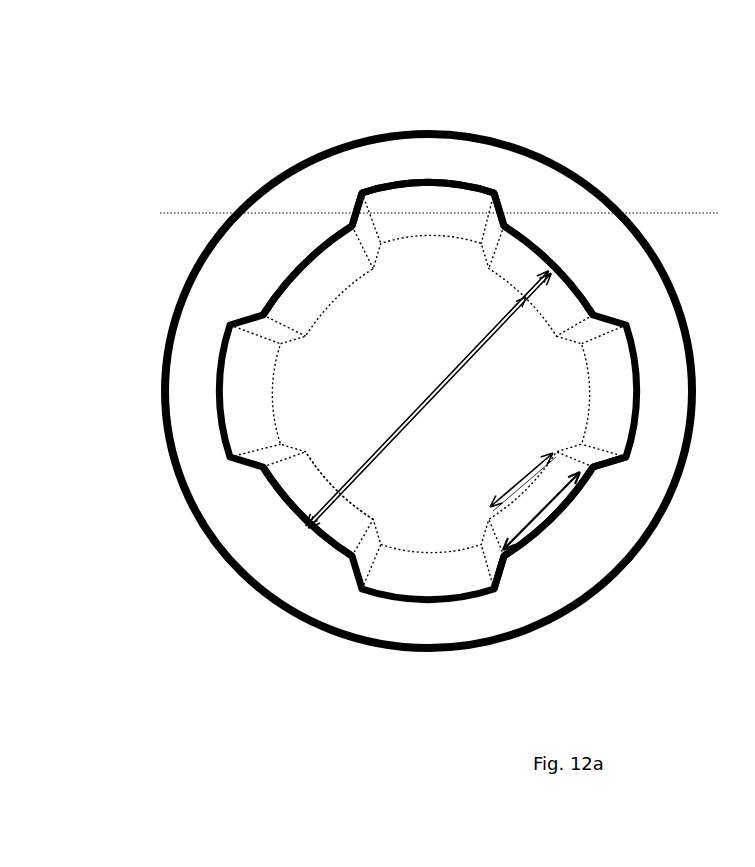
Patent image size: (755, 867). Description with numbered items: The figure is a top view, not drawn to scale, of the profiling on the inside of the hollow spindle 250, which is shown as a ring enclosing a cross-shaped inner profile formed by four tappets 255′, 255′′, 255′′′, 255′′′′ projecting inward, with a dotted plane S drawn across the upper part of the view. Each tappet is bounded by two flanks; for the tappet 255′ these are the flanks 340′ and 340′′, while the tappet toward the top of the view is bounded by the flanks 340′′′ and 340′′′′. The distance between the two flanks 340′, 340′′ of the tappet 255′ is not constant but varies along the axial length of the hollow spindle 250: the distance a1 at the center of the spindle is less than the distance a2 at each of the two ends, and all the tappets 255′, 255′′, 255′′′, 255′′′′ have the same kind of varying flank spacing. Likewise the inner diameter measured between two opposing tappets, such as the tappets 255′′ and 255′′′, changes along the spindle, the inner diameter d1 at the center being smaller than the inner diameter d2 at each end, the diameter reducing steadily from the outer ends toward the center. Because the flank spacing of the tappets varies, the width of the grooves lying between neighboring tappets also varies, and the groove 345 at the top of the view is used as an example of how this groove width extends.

The hollow spindle 250 is at (188, 397).
The section plane S is at (439, 230).
The groove 345 is at (425, 168).
The flank 340′′′′ is at (348, 222).
The flank 340′′′ is at (502, 216).
The flank 340′′ is at (619, 474).
The flank 340′ is at (515, 578).
The tappet 255′′′′ is at (566, 261).
The tappet 255′′′ is at (285, 256).
The tappet 255′′ is at (284, 531).
The tappet 255′ is at (568, 526).
The inner diameter at the center d1 is at (347, 463).
The inner diameter at the ends d2 is at (430, 399).
The distance between flanks at the center a1 is at (523, 481).
The distance between flanks at the ends a2 is at (541, 511).